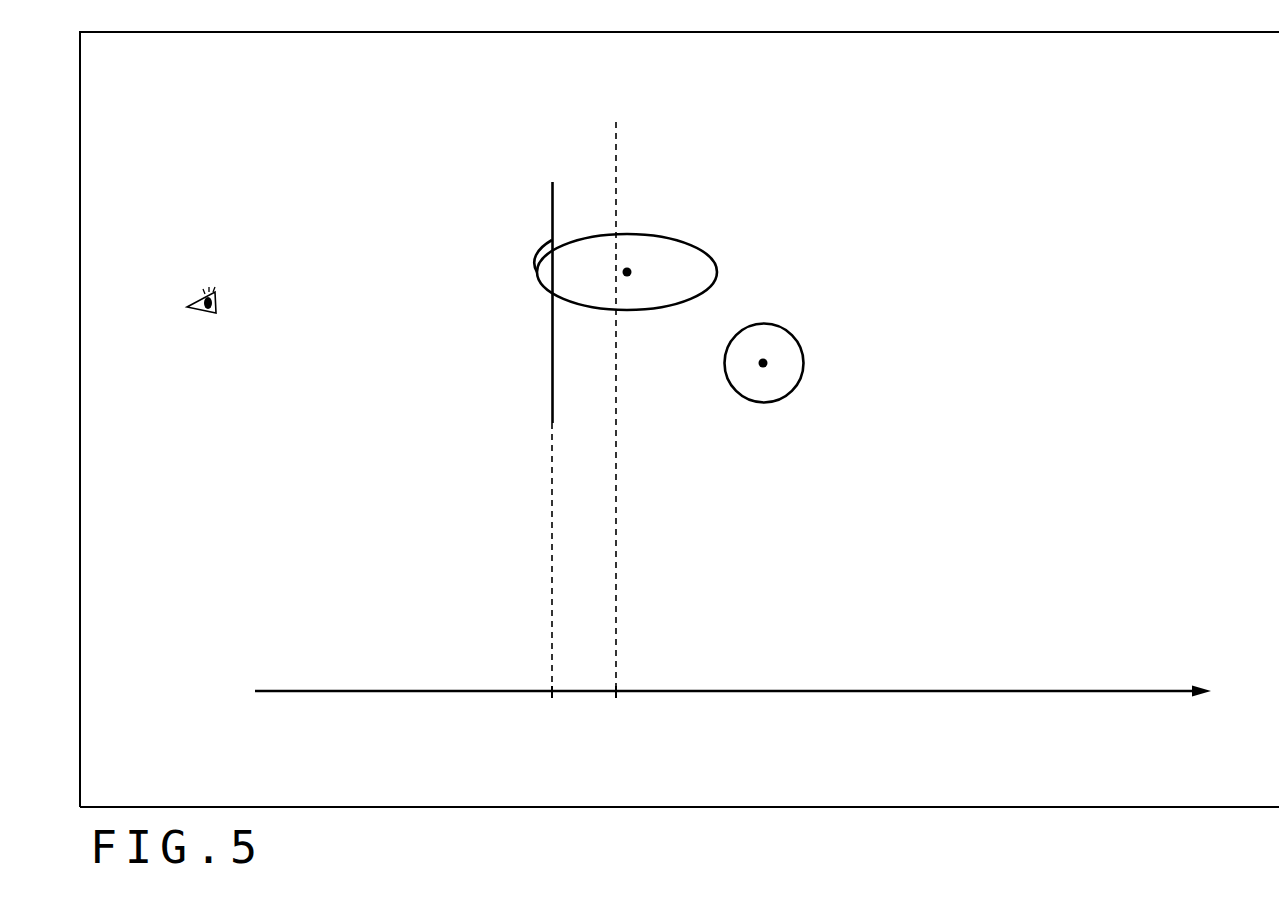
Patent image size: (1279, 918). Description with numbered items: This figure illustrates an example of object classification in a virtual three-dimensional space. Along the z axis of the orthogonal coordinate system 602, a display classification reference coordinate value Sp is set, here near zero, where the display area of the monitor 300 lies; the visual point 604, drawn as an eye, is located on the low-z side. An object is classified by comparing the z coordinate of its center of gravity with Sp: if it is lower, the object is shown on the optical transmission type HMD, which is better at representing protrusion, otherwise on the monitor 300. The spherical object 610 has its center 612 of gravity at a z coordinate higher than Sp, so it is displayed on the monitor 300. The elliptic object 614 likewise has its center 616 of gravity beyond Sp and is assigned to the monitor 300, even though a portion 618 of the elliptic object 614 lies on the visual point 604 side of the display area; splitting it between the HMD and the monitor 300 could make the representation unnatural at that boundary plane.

The monitor 300 is at (550, 184).
The orthogonal coordinate system 602 is at (1113, 690).
The visual point 604 is at (195, 316).
The spherical object 610 is at (782, 326).
The center of gravity of the spherical object 612 is at (764, 368).
The elliptic object 614 is at (672, 237).
The center of gravity of the elliptic object 616 is at (628, 277).
The portion of the elliptic object 618 is at (543, 270).